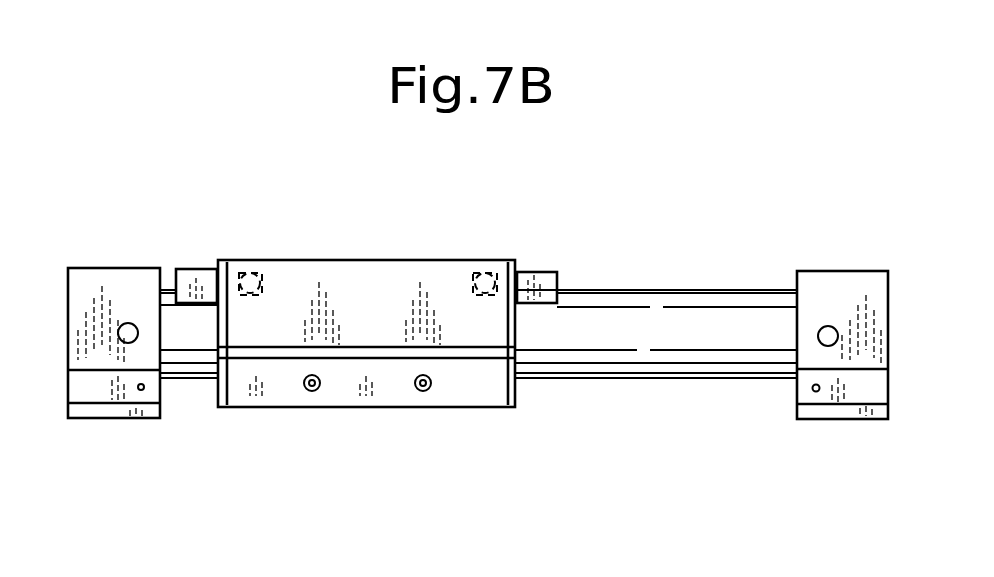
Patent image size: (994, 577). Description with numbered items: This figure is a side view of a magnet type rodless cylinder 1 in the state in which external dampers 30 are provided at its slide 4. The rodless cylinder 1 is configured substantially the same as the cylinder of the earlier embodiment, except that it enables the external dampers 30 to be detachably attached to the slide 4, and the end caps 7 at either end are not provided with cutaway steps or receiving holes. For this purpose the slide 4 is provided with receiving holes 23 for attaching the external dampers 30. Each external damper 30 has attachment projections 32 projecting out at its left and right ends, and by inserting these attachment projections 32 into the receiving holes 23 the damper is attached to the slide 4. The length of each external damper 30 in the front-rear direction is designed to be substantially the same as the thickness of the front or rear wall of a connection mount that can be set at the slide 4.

The magnet type rodless cylinder 1 is at (484, 202).
The slide 4 is at (390, 280).
The end cap 7 is at (95, 350).
The receiving hole 23 is at (260, 277).
The external damper 30 is at (202, 275).
The attachment projection 32 is at (248, 273).